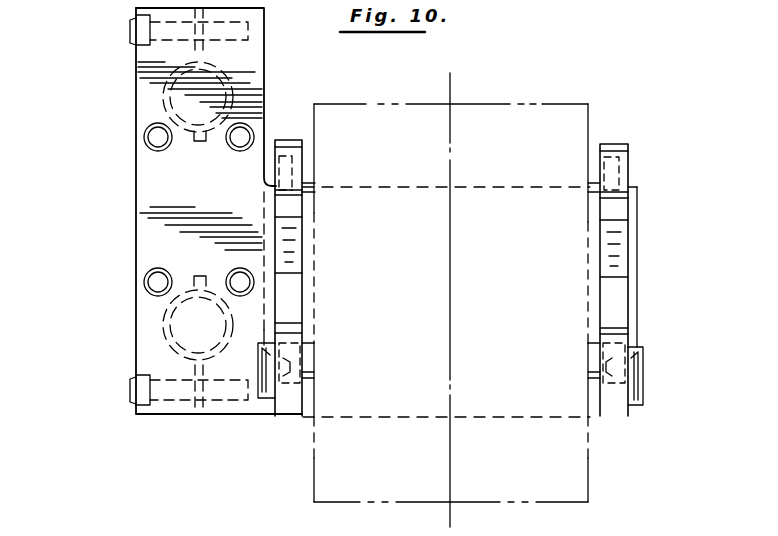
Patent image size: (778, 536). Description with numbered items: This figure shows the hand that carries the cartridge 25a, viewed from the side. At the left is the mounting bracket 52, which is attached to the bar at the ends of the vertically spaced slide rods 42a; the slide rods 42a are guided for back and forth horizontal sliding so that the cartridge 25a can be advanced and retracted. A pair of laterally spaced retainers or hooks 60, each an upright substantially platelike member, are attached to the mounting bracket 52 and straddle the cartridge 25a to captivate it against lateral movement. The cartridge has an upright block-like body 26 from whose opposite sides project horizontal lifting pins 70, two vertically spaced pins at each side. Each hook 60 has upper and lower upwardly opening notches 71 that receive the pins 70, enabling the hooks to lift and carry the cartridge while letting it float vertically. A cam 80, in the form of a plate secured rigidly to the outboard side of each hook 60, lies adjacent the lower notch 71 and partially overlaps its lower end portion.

The cartridge 25a is at (572, 101).
The body 26 is at (585, 458).
The slide rods 42a is at (165, 99).
The mounting bracket 52 is at (136, 223).
The retainer 60 is at (290, 256).
The lifting elements 70 is at (305, 168).
The notches 71 is at (302, 374).
The cam 80 is at (267, 400).